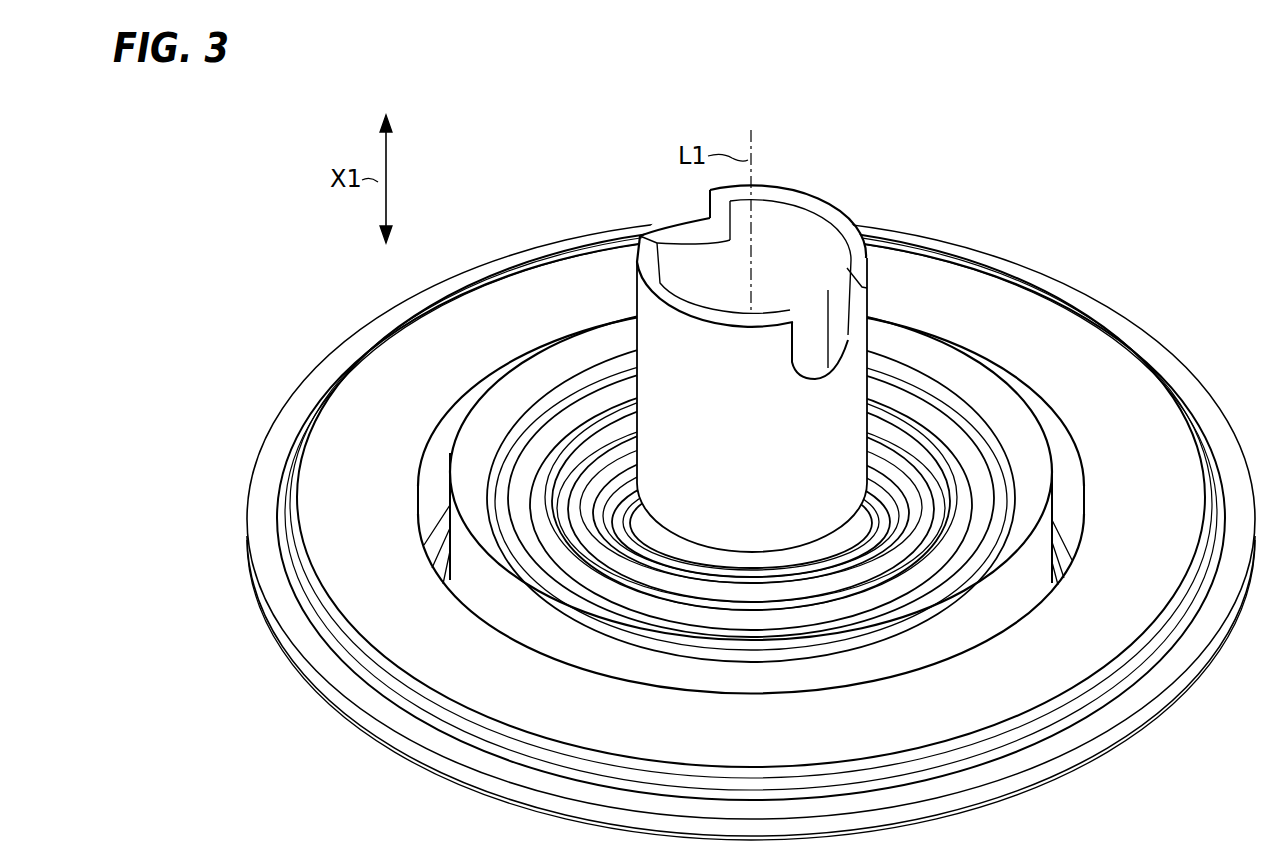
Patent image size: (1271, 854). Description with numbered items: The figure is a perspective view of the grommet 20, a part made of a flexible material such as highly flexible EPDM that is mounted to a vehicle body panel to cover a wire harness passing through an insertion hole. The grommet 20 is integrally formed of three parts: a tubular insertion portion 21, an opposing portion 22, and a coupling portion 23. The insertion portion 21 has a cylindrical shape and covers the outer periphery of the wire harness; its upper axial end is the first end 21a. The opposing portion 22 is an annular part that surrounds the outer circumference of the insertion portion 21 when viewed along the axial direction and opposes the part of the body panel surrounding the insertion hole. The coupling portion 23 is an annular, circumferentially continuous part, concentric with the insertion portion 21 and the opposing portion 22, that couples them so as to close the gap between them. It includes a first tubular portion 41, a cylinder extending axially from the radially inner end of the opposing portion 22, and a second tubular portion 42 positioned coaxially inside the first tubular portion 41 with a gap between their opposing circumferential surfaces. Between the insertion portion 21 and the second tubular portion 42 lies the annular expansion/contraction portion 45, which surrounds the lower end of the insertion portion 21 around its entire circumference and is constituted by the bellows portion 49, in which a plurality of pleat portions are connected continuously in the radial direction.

The grommet 20 is at (751, 485).
The insertion portion 21 is at (637, 311).
The first end 21a is at (820, 210).
The opposing portion 22 is at (1158, 356).
The coupling portion 23 is at (1028, 430).
The first tubular portion 41 is at (1068, 504).
The second tubular portion 42 is at (1027, 594).
The expansion/contraction portion 45 is at (913, 380).
The bellows portion 49 is at (717, 620).